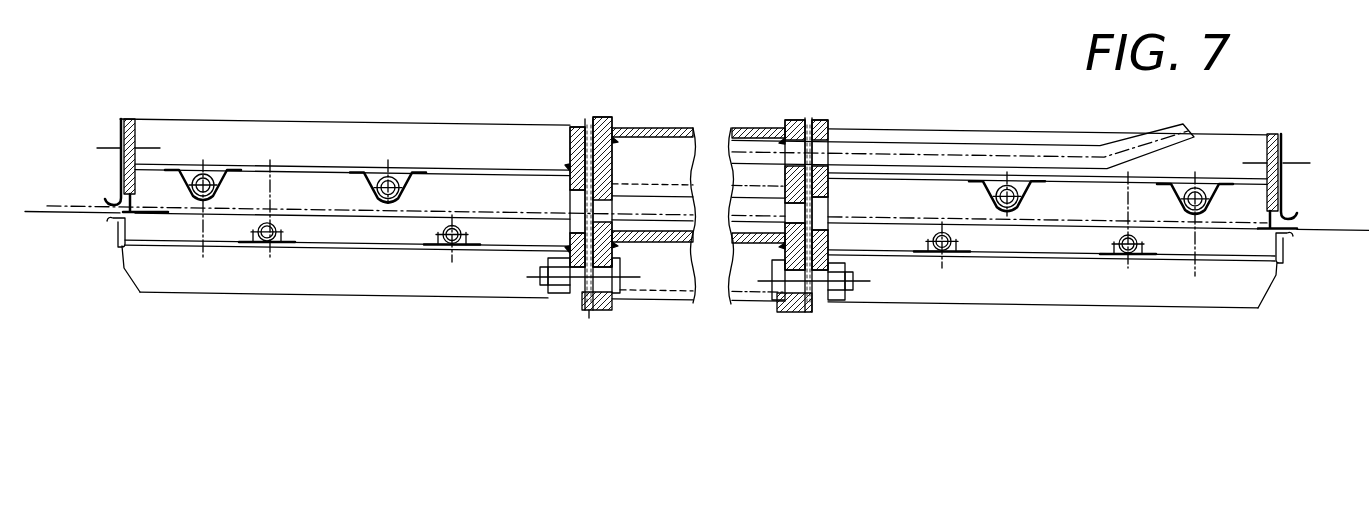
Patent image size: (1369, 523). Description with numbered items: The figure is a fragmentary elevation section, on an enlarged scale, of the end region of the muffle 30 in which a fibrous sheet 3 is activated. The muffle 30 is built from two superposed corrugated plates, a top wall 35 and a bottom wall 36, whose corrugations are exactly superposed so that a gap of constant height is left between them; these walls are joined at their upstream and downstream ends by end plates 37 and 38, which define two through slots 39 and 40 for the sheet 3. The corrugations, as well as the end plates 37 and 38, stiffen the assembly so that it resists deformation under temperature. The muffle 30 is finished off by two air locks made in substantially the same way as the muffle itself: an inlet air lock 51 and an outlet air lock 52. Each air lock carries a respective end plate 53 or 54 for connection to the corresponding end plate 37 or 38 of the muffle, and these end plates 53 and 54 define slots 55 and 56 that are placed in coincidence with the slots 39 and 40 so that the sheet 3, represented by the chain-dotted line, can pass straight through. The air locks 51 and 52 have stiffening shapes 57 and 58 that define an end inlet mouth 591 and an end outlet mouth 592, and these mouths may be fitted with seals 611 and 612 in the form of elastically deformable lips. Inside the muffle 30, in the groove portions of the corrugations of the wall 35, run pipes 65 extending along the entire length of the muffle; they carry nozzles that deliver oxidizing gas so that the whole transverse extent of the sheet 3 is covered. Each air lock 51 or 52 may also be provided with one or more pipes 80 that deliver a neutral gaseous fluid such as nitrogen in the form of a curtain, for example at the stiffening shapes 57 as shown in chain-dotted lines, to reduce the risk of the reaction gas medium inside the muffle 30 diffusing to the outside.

The sheet 3 is at (62, 215).
The muffle 30 is at (748, 121).
The wall 35 is at (643, 128).
The wall 36 is at (662, 242).
The end plate 37 is at (598, 311).
The end plate 38 is at (795, 120).
The through slot 39 is at (605, 210).
The through slot 40 is at (795, 212).
The inlet air lock 51 is at (344, 116).
The outlet air lock 52 is at (956, 126).
The end plate 53 is at (568, 128).
The end plate 54 is at (830, 123).
The slot 55 is at (580, 198).
The slot 56 is at (818, 204).
The stiffening shape 57 is at (410, 184).
The stiffening shape 58 is at (1034, 186).
The pipe 65 is at (1005, 150).
The pipe 80 is at (272, 158).
The seal 611 is at (147, 212).
The seal 612 is at (1305, 228).
The end inlet mouth 591 is at (121, 266).
The end outlet mouth 592 is at (1272, 218).